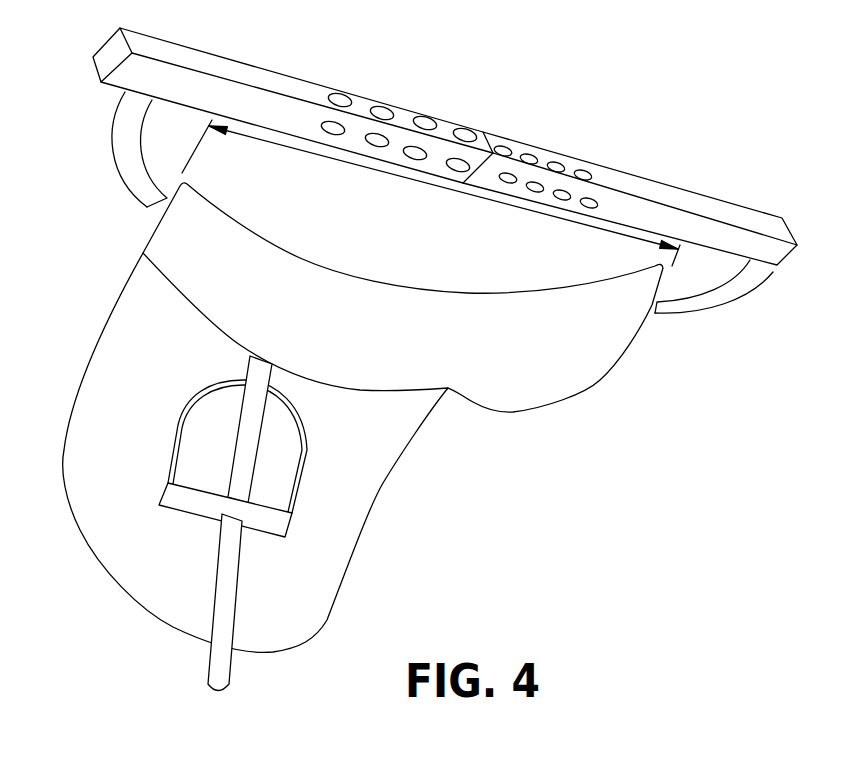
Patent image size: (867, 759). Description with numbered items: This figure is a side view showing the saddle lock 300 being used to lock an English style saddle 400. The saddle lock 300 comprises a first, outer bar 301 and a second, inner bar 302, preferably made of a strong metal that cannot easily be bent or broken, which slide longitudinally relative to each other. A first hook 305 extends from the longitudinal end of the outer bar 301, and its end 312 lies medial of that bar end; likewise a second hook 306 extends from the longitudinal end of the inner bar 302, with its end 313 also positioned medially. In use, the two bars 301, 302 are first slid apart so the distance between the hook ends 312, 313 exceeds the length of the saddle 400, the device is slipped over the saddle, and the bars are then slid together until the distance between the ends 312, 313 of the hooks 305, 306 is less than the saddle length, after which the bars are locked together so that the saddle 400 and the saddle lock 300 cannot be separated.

The saddle lock 300 is at (420, 192).
The first, outer bar 301 is at (256, 96).
The second, inner bar 302 is at (733, 232).
The first hook 305 is at (99, 158).
The second hook 306 is at (732, 308).
The end of the first hook 312 is at (136, 181).
The end of the second hook 313 is at (657, 307).
The English style saddle 400 is at (340, 510).